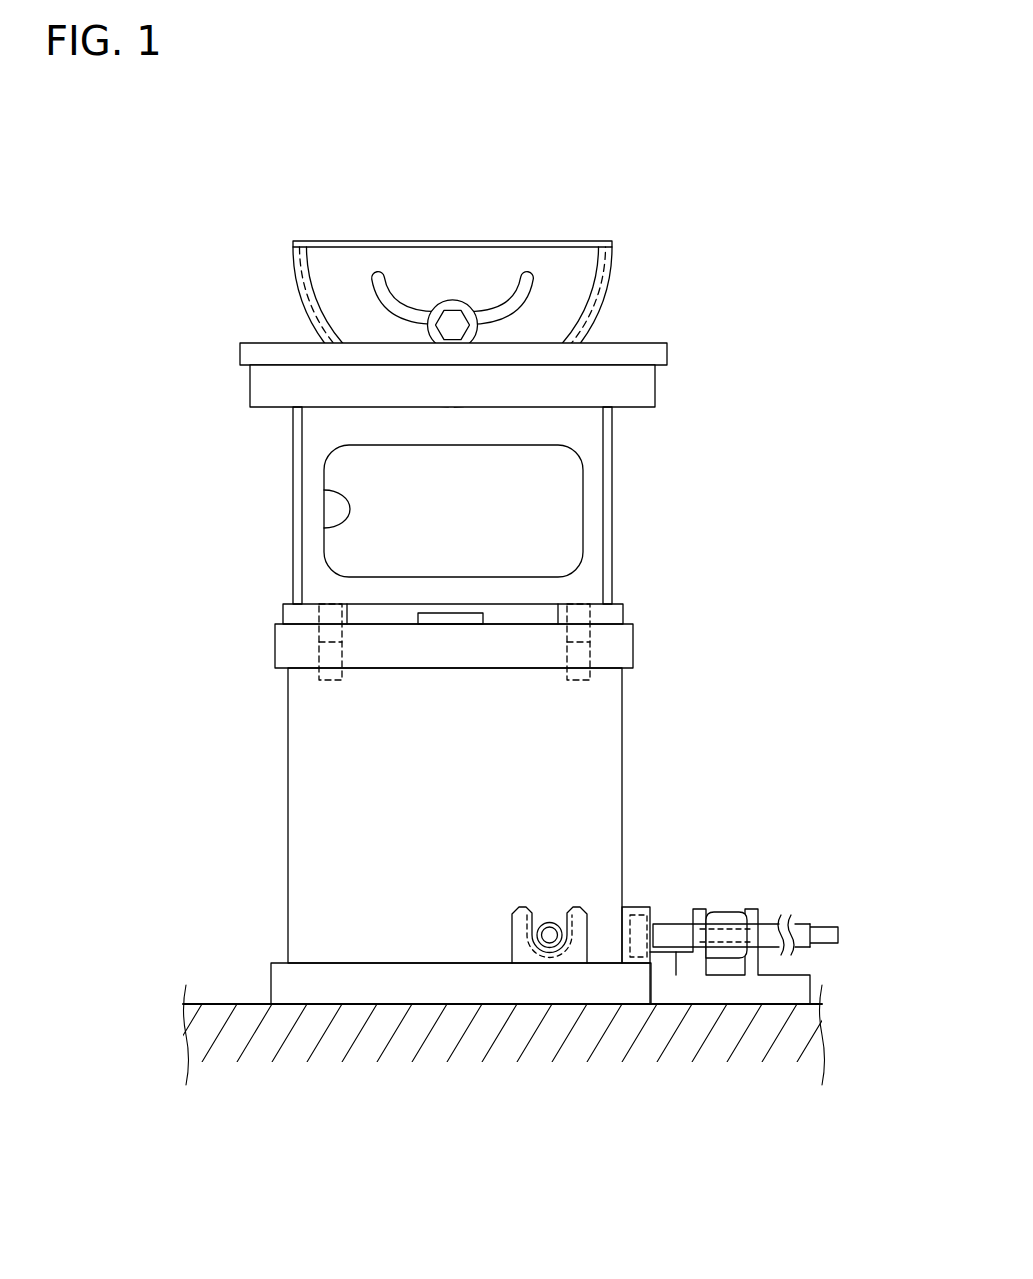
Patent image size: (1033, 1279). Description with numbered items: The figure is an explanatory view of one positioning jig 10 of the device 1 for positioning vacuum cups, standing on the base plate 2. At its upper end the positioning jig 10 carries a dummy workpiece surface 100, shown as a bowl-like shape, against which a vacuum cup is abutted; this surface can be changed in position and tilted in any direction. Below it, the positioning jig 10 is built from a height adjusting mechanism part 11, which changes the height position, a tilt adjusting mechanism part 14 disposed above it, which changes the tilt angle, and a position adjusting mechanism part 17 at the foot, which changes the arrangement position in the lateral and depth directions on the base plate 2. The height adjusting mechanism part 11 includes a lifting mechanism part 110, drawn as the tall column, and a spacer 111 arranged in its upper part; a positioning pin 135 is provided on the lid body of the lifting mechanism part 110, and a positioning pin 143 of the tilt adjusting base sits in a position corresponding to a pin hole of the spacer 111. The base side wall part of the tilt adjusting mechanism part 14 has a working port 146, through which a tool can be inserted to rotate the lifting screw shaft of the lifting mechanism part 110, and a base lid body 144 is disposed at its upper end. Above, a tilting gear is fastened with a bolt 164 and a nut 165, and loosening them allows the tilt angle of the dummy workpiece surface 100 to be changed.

The device for positioning vacuum cups 1 is at (666, 168).
The base plate 2 is at (325, 1043).
The positioning jig 10 is at (671, 270).
The height adjusting mechanism part 11 is at (640, 740).
The tilt adjusting mechanism part 14 is at (623, 472).
The position adjusting mechanism part 17 is at (583, 898).
The dummy workpiece surface 100 is at (334, 243).
The lifting mechanism part 110 is at (282, 728).
The spacer 111 is at (613, 643).
The positioning pin 135 is at (327, 657).
The positioning pin 143 is at (332, 617).
The base lid body 144 is at (263, 388).
The working port 146 is at (348, 528).
The bolt 164 is at (449, 318).
The nut 165 is at (452, 314).